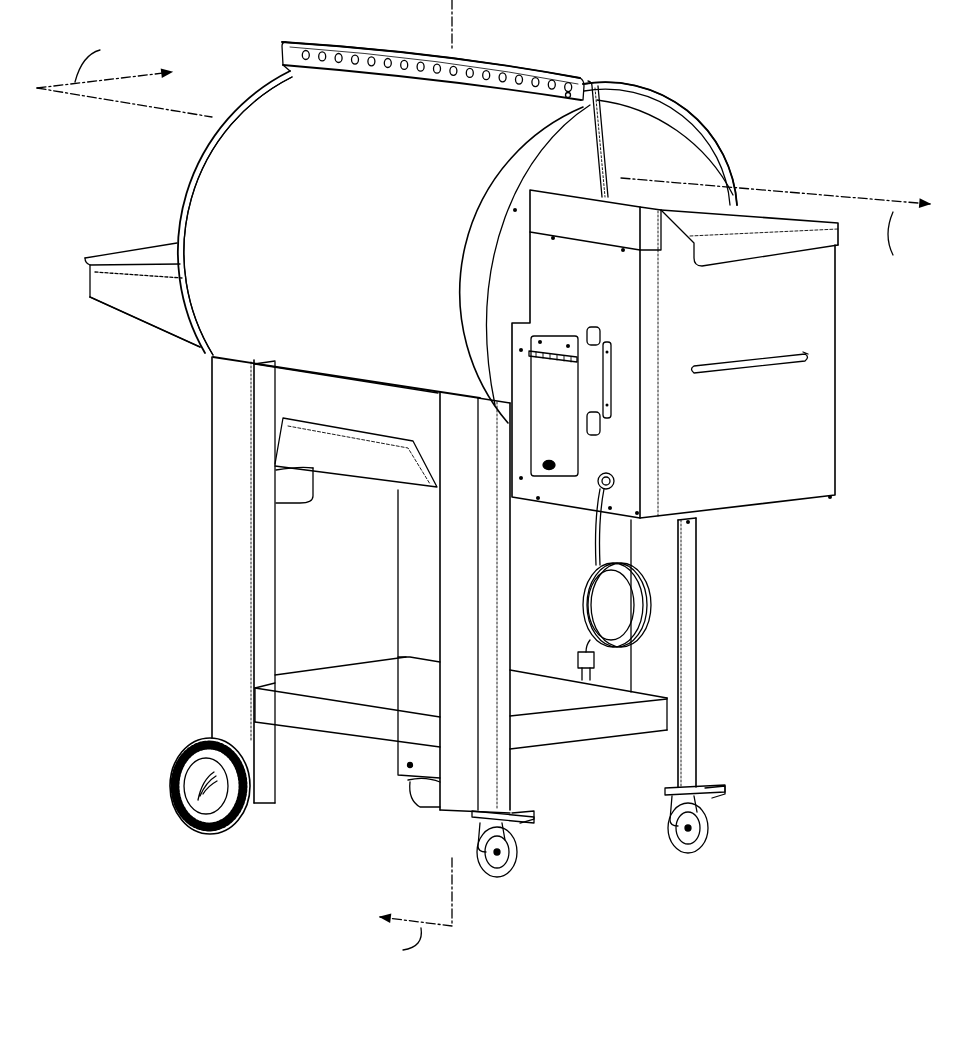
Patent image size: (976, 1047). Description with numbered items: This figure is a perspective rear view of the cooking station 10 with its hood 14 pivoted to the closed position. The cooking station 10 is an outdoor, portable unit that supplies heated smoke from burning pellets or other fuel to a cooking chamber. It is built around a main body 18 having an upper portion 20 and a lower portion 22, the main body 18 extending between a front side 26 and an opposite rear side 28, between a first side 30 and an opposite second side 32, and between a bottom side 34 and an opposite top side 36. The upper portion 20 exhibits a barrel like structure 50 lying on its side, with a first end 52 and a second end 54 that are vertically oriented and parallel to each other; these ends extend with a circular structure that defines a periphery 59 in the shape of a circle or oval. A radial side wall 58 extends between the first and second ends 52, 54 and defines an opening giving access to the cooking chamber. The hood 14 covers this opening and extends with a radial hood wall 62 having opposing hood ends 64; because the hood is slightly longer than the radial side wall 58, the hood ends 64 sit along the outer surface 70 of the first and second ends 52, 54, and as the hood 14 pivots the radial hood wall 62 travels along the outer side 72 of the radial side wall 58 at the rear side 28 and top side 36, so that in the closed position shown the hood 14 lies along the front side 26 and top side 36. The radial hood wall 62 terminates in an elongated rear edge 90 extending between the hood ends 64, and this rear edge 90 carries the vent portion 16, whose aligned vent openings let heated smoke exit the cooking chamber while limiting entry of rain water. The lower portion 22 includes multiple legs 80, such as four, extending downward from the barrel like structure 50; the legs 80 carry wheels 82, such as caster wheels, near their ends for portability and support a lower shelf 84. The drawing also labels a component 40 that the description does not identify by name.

The cooking station 10 is at (828, 37).
The hood 14 is at (666, 98).
The vent portion 16 is at (487, 105).
The main body 18 is at (200, 363).
The upper portion 20 is at (140, 331).
The lower portion 22 is at (128, 615).
The front side 26 is at (861, 126).
The rear side 28 is at (125, 693).
The first side 30 is at (770, 585).
The second side 32 is at (165, 523).
The bottom side 34 is at (386, 821).
The top side 36 is at (541, 36).
The pellet hopper 40 is at (839, 338).
The barrel like structure 50 is at (180, 183).
The first end 52 is at (510, 283).
The second end 54 is at (180, 212).
The radial side wall 58 is at (205, 294).
The periphery 59 is at (493, 184).
The radial hood wall 62 is at (693, 125).
The hood ends 64 is at (694, 165).
The outer surface 70 is at (585, 152).
The outer side 72 is at (265, 90).
The legs 80 is at (700, 660).
The wheels 82 is at (201, 843).
The lower shelf 84 is at (570, 732).
The rear edge 90 is at (340, 68).